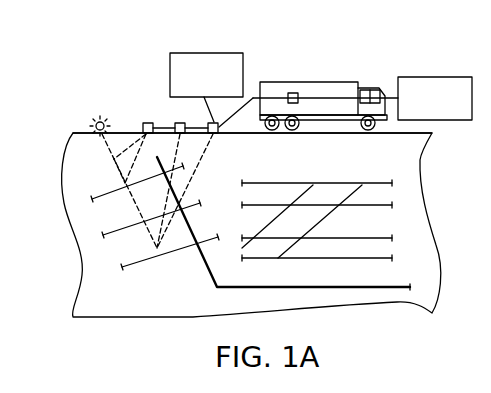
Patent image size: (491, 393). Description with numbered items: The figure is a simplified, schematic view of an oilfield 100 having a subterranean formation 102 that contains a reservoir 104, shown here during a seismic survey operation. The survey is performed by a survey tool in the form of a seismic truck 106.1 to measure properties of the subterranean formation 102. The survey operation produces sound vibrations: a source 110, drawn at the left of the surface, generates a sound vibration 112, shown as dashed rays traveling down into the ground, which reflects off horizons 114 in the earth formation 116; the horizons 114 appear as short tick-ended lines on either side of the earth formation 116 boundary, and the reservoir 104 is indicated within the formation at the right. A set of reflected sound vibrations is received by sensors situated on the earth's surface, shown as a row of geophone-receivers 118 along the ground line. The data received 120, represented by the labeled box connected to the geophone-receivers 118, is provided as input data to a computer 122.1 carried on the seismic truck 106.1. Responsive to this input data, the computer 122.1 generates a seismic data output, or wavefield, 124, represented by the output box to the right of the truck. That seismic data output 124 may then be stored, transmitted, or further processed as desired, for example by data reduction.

The oilfield 100 is at (392, 58).
The subterranean formation 102 is at (321, 202).
The reservoir 104 is at (374, 229).
The seismic truck 106.1 is at (340, 82).
The source 110 is at (98, 116).
The sound vibration 112 is at (110, 162).
The horizons 114 is at (93, 201).
The earth formation 116 is at (203, 268).
The geophone-receivers 118 is at (212, 123).
The data received 120 is at (199, 53).
The computer 122.1 is at (295, 93).
The seismic data output/wavefield 124 is at (435, 77).